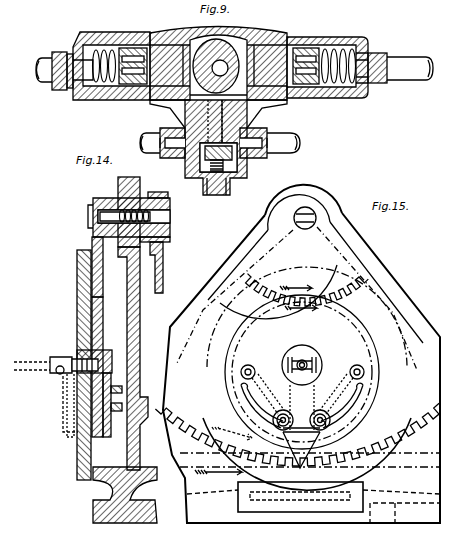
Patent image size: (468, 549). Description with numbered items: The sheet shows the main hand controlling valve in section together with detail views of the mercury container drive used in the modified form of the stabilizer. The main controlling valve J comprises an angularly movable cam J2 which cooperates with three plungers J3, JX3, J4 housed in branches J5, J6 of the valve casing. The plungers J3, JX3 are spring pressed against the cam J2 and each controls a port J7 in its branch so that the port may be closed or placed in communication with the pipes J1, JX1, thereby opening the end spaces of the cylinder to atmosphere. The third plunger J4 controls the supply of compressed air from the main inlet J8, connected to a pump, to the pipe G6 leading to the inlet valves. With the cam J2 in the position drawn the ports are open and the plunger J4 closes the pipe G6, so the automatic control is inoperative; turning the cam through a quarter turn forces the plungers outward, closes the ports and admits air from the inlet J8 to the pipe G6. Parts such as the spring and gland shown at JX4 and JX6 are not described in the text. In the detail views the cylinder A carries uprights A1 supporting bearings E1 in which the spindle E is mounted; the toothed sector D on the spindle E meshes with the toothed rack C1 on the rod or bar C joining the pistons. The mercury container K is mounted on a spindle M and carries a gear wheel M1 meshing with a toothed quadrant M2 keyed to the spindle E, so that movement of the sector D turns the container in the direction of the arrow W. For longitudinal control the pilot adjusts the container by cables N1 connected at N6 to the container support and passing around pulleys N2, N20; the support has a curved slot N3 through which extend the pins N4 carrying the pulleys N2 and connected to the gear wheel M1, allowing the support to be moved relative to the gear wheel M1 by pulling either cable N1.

In FIG. 9, the main controlling valve J is at (224, 30).
In FIG. 9, the pipe J1 is at (50, 82).
In FIG. 9, the cam J2 is at (268, 103).
In FIG. 9, the plunger J3 is at (181, 34).
In FIG. 9, the plunger J4 is at (210, 125).
In FIG. 9, the branch of main valve casing J5 is at (122, 33).
In FIG. 9, the branch of main valve casing J6 is at (245, 170).
In FIG. 9, the port J7 is at (143, 90).
In FIG. 9, the main inlet J8 is at (206, 188).
In FIG. 9, the pipe JX1 is at (400, 75).
In FIG. 9, the plunger JX3 is at (297, 40).
In FIG. 9, the right spring JX4 is at (308, 42).
In FIG. 9, the right gland nut JX6 is at (362, 35).
In FIG. 9, the pipe G6 is at (146, 143).
In FIG. 14, the spindle E is at (152, 216).
In FIG. 15, the spindle E is at (318, 222).
In FIG. 14, the bearings E1 is at (128, 195).
In FIG. 14, the spindle M is at (112, 358).
In FIG. 15, the spindle M is at (306, 361).
In FIG. 14, the gear wheel M1 is at (97, 315).
In FIG. 15, the gear wheel M1 is at (265, 295).
In FIG. 14, the toothed quadrant M2 is at (97, 240).
In FIG. 15, the toothed quadrant M2 is at (330, 241).
In FIG. 14, the mercury container K is at (80, 268).
In FIG. 15, the mercury container K is at (380, 300).
In FIG. 14, the toothed sector D is at (160, 258).
In FIG. 15, the toothed sector D is at (195, 345).
In FIG. 14, the cylinder A is at (128, 502).
In FIG. 15, the cylinder A is at (400, 505).
In FIG. 14, the uprights A1 is at (132, 280).
In FIG. 15, the uprights A1 is at (415, 330).
In FIG. 14, the cables N1 is at (58, 374).
In FIG. 15, the cables N1 is at (290, 385).
In FIG. 14, the pulleys N2 is at (67, 418).
In FIG. 15, the pulleys N2 is at (300, 464).
In FIG. 15, the curved slot N3 is at (262, 405).
In FIG. 14, the pins N4 is at (80, 432).
In FIG. 15, the pins N4 is at (332, 405).
In FIG. 15, the cable connection point N6 is at (250, 366).
In FIG. 14, the pulleys N20 is at (62, 356).
In FIG. 15, the pulleys N20 is at (300, 358).
In FIG. 15, the arrow W is at (310, 310).
In FIG. 15, the rod or bar C is at (225, 492).
In FIG. 15, the toothed rack C1 is at (200, 425).